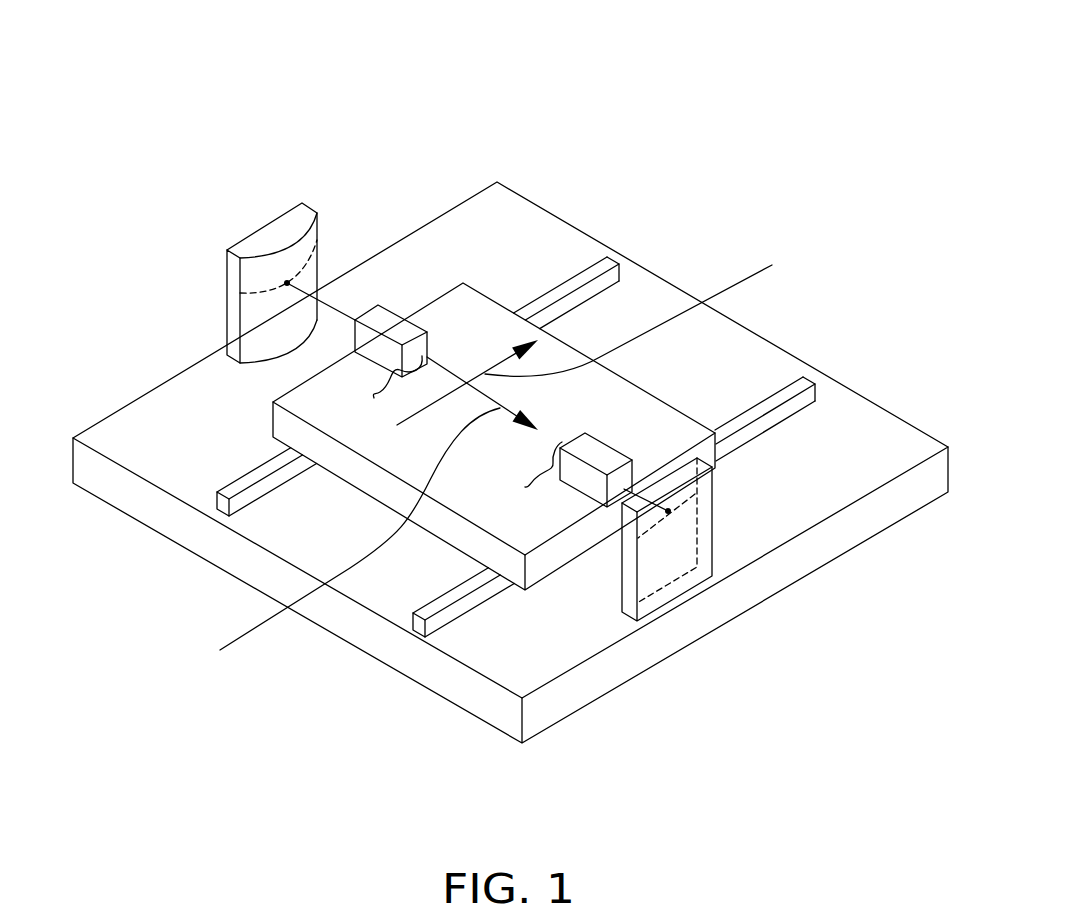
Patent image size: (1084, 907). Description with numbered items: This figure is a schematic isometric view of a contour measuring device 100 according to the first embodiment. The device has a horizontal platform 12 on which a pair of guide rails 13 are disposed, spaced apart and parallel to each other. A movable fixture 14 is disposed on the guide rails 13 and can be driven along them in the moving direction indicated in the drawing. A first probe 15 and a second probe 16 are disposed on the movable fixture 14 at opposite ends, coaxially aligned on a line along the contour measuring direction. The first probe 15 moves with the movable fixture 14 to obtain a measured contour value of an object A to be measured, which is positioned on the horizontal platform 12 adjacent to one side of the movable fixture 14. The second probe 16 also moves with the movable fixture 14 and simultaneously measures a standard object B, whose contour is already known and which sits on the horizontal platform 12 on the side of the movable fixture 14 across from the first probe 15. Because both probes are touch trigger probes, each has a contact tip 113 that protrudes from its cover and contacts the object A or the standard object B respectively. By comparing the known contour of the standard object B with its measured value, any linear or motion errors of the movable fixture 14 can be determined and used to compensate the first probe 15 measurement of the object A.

The contour measuring device 100 is at (516, 44).
The horizontal platform 12 is at (313, 553).
The guide rails 13 is at (211, 493).
The movable fixture 14 is at (307, 405).
The first probe 15 is at (385, 322).
The second probe 16 is at (583, 478).
The contact tip 113 is at (336, 304).
The object to be measured A is at (227, 295).
The standard object B is at (705, 530).